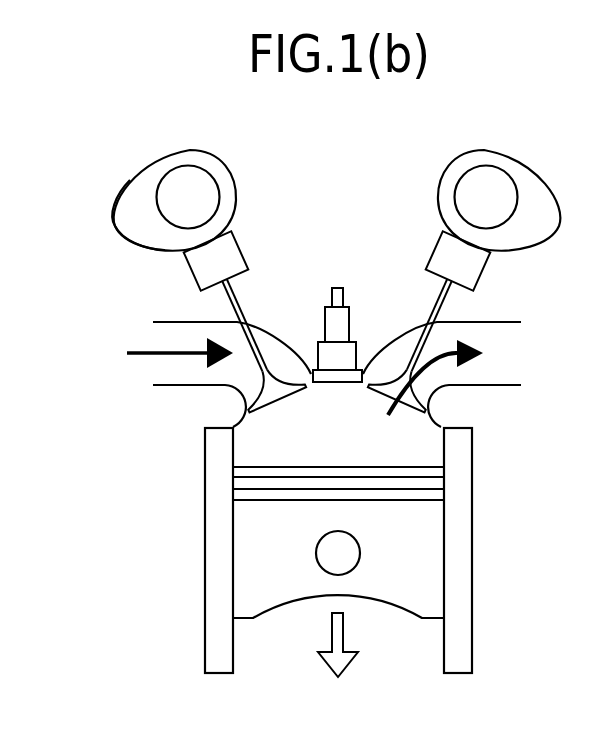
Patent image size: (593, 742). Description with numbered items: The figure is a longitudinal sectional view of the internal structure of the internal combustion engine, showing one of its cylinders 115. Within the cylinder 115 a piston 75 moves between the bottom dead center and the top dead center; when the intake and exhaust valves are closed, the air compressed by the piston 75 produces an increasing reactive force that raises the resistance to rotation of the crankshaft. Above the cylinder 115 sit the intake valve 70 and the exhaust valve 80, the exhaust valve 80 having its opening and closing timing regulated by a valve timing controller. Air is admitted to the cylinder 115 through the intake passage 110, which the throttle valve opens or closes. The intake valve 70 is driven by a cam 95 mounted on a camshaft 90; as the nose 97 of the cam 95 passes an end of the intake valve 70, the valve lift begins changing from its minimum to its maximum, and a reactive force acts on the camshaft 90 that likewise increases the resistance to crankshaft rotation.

The intake valve 70 is at (277, 380).
The piston 75 is at (408, 583).
The exhaust valve 80 is at (393, 382).
The camshaft 90 is at (190, 188).
The cam 95 is at (143, 195).
The nose 97 is at (132, 220).
The intake passage 110 is at (175, 335).
The cylinder 115 is at (398, 453).